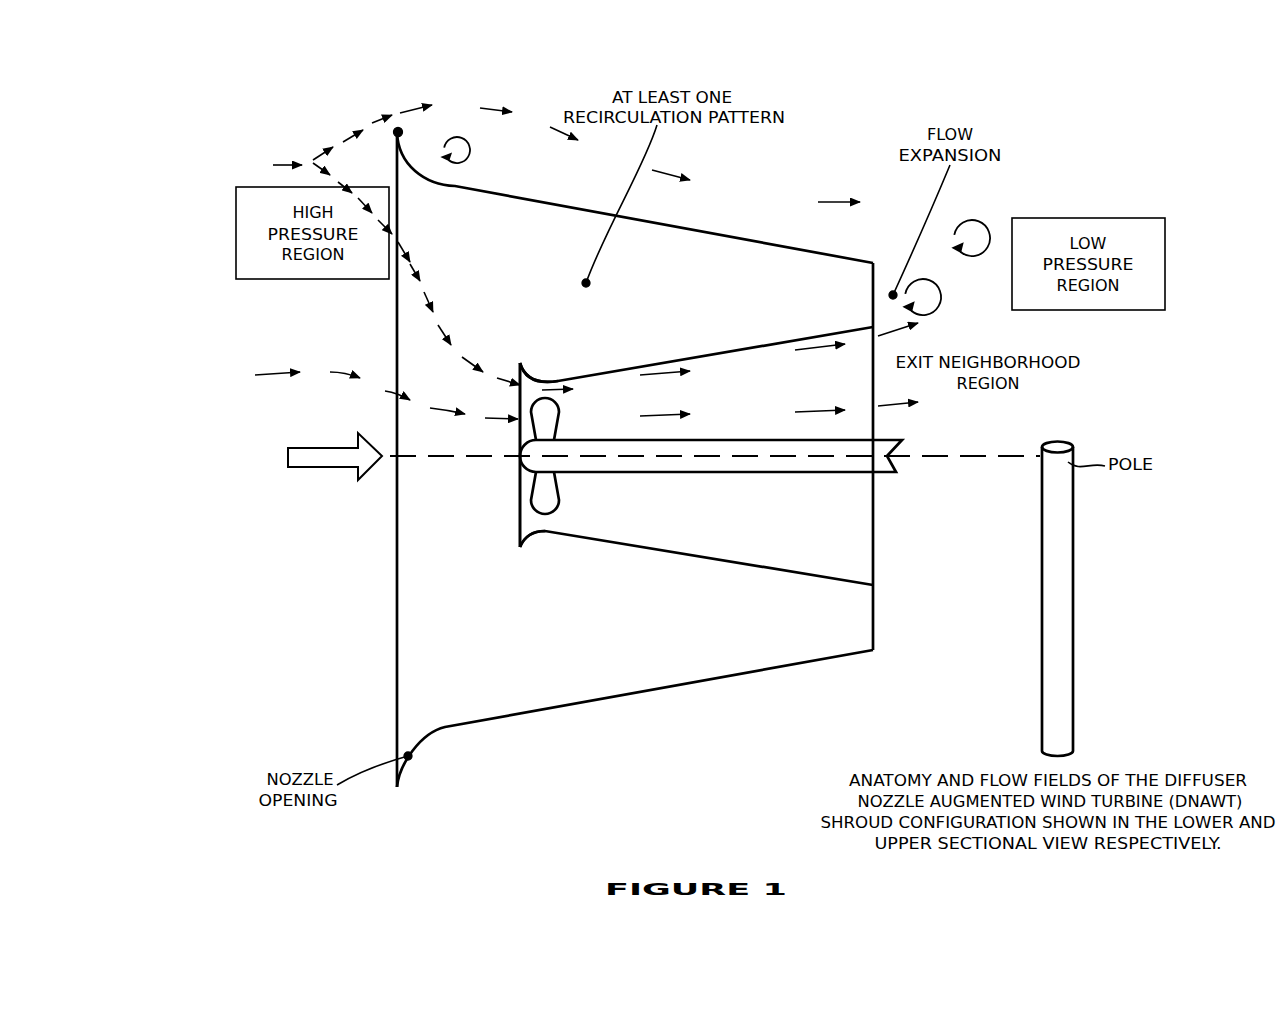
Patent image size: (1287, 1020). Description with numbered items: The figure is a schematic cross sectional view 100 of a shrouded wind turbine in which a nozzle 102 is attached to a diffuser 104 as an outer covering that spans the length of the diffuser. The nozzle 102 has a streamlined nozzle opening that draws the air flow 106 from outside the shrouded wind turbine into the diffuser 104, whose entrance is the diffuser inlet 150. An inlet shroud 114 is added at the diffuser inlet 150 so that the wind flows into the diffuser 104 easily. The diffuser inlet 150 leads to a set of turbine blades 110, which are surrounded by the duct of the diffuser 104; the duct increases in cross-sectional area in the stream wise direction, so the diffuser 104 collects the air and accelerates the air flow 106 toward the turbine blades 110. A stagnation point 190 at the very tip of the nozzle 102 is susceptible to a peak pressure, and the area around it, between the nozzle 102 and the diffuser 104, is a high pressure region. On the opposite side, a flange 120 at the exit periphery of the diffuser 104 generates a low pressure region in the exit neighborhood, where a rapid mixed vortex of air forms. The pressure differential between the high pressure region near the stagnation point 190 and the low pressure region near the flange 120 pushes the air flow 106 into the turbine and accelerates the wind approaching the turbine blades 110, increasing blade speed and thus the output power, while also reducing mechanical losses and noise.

The cross sectional view 100 is at (310, 845).
The nozzle 102 is at (590, 700).
The diffuser 104 is at (576, 532).
The air flow 106 is at (330, 447).
The turbine blades 110 is at (545, 498).
The inlet shroud 114 is at (535, 532).
The flange 120 is at (873, 632).
The diffuser inlet 150 is at (520, 504).
The stagnation point 190 is at (398, 132).